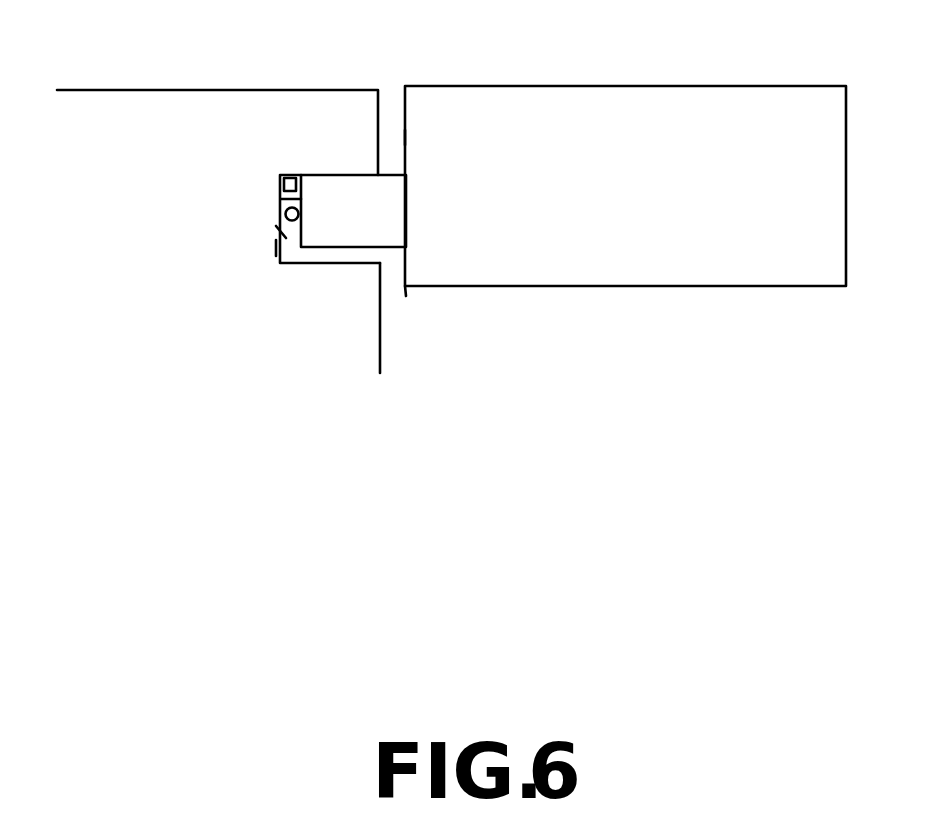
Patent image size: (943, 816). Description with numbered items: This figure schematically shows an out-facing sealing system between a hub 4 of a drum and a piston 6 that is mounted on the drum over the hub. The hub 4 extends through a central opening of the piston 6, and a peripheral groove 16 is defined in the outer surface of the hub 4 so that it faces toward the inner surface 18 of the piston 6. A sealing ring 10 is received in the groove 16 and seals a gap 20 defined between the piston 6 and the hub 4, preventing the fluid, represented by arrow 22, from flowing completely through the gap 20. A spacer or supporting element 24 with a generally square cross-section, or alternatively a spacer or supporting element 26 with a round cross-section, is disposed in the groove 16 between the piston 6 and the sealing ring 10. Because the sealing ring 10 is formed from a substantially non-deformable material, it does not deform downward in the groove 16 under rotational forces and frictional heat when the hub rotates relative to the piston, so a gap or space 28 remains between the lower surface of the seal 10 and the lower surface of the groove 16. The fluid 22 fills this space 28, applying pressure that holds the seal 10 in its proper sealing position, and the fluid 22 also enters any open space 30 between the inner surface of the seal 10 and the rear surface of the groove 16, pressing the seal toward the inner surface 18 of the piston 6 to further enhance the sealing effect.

The hub 4 is at (215, 90).
The piston 6 is at (738, 86).
The sealing ring 10 is at (378, 229).
The peripheral groove 16 is at (273, 248).
The inner surface of the piston 18 is at (405, 136).
The gap 20 is at (393, 108).
The fluid 22 is at (400, 300).
The spacer or supporting element 24 is at (281, 180).
The spacer or supporting element 26 is at (281, 206).
The gap or space 28 is at (307, 253).
The open space 30 is at (284, 236).